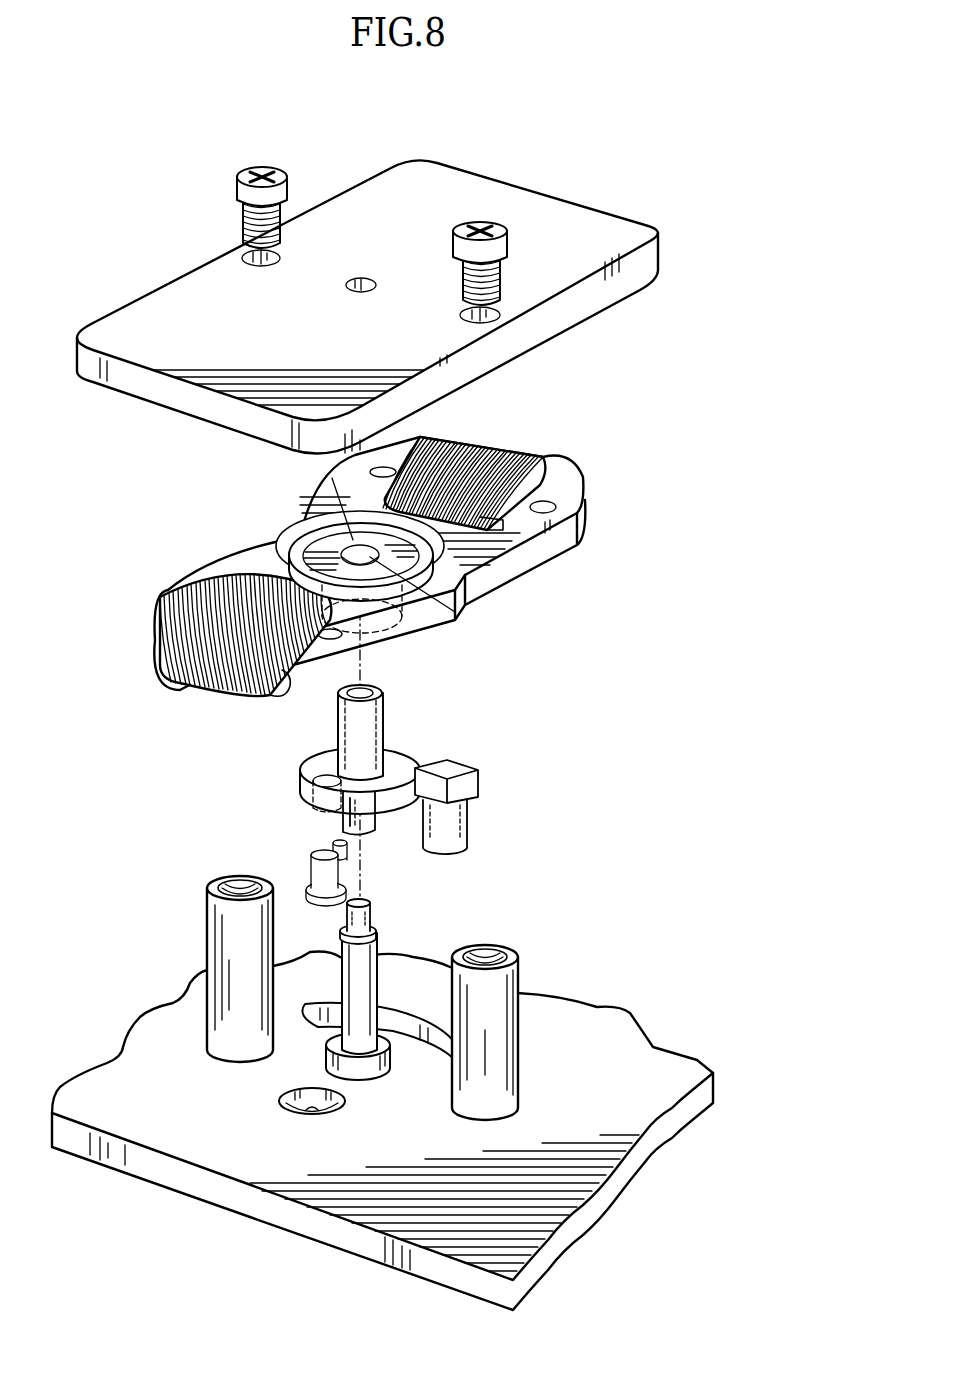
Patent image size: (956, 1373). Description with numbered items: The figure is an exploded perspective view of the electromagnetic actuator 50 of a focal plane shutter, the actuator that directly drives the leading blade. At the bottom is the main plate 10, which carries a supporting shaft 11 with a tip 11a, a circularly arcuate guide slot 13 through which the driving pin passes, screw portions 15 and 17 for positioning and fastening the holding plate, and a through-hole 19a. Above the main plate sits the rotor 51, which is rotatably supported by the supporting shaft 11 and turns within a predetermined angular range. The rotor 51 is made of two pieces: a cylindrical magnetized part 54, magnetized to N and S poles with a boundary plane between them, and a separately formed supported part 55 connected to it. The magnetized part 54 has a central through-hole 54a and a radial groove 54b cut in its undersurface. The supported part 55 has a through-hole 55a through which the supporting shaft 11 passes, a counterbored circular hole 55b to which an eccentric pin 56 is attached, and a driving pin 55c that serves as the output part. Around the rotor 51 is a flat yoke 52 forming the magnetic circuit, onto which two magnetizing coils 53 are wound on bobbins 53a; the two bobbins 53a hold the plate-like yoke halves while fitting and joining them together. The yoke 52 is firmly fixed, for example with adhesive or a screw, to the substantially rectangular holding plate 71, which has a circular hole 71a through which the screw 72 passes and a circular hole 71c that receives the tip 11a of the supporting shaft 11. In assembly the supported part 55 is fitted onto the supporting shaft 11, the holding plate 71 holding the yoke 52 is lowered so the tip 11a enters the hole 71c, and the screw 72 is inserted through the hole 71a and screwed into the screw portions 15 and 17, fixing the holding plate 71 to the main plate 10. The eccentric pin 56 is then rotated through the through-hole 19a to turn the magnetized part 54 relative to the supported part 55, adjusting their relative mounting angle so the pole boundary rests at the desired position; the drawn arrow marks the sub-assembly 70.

The screw 72 is at (287, 174).
The circular hole 71c is at (362, 280).
The circular hole 71a is at (265, 268).
The holding plate 71 is at (575, 308).
The magnetizing coil 53 is at (520, 440).
The electromagnetic actuator 50 is at (125, 500).
The magnetized part 54 is at (345, 535).
The bobbin 53a is at (570, 470).
The rotor 51 is at (292, 542).
The yoke 52 is at (215, 560).
The through-hole 54a is at (455, 612).
The groove 54b is at (398, 640).
The through-hole 55a is at (385, 690).
The supported part 55 is at (400, 752).
The shaft unit 70 is at (490, 767).
The circular hole 55b is at (313, 781).
The driving pin 55c is at (462, 822).
The eccentric pin 56 is at (305, 870).
The tip of the supporting shaft 11a is at (372, 905).
The circularly arcuate guide slot 13 is at (410, 1012).
The screw portion 17 is at (207, 953).
The screw portion 15 is at (500, 990).
The main plate 10 is at (620, 1030).
The supporting shaft 11 is at (358, 1040).
The through-hole 19a is at (318, 1113).